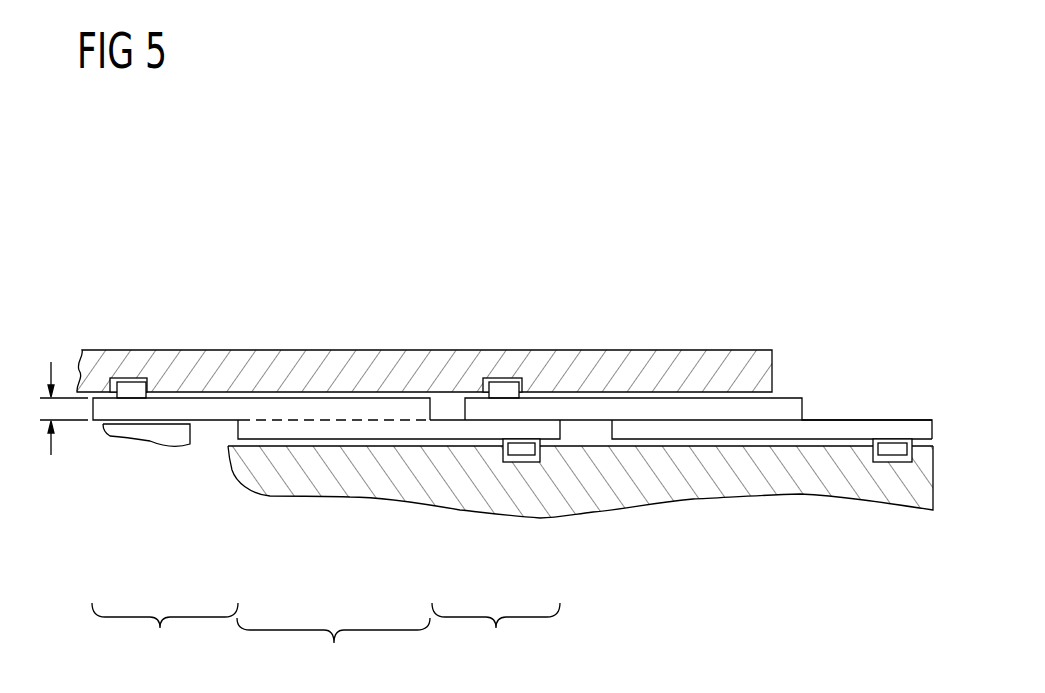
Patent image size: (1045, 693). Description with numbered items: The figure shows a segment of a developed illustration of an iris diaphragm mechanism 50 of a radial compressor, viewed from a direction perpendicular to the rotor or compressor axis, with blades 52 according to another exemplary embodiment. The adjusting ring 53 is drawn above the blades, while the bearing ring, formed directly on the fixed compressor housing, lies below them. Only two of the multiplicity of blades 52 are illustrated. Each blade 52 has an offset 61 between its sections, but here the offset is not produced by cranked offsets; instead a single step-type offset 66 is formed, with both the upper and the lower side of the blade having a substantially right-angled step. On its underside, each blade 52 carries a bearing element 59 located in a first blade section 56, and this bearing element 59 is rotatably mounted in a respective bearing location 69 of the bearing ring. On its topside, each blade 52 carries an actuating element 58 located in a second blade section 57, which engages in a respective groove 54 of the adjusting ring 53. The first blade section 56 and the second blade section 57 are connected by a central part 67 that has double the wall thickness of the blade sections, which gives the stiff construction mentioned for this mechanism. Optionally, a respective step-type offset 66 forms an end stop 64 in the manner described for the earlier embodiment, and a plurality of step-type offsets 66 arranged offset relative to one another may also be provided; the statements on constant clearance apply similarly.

The iris diaphragm mechanism 50 is at (845, 282).
The adjusting ring 53 is at (641, 360).
The groove 54 is at (147, 390).
The actuating element 58 is at (130, 386).
The offset 61 is at (48, 410).
The end stop 64 is at (446, 402).
The blade 52 is at (400, 440).
The step-type offset 66 is at (212, 441).
The bearing element 59 is at (512, 447).
The bearing location 69 is at (530, 452).
The second blade section 57 is at (165, 634).
The central part 67 is at (333, 651).
The first blade section 56 is at (496, 634).